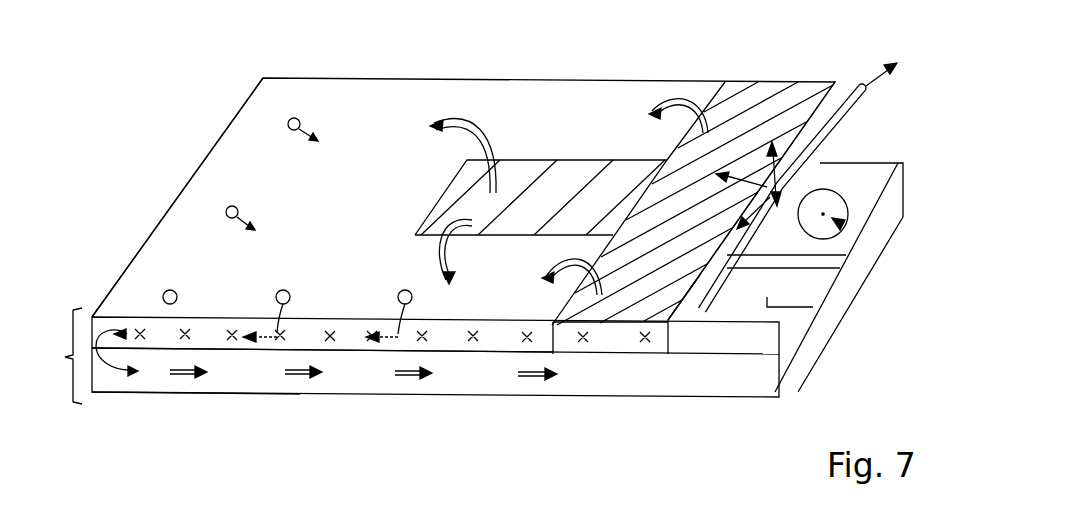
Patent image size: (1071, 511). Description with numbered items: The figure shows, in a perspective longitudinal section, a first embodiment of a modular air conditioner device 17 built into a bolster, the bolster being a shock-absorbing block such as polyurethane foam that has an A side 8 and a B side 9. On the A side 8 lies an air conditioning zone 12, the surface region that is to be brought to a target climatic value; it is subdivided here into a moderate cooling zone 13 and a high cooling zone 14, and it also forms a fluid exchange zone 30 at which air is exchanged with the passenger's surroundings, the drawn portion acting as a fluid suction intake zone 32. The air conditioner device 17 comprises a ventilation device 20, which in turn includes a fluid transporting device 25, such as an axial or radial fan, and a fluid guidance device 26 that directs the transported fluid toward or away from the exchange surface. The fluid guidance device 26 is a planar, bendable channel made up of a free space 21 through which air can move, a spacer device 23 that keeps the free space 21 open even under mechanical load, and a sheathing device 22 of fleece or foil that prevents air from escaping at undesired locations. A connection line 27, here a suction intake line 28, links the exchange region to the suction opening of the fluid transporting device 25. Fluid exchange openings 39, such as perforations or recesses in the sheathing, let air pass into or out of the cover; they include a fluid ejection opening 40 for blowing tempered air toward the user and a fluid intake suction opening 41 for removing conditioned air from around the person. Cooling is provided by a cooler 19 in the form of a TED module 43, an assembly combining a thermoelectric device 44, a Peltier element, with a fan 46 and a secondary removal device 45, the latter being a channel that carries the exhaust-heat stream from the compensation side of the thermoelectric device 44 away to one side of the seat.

The A side 8 is at (196, 204).
The B side 9 is at (138, 400).
The air conditioning zone 12 is at (744, 95).
The moderate cooling zone 13 is at (541, 151).
The high cooling zone 14 is at (446, 112).
The air conditioner device 17 is at (408, 356).
The cooler 19 is at (793, 320).
The ventilation device 20 is at (227, 114).
The free space 21 is at (229, 347).
The sheathing device 22 is at (202, 320).
The spacer device 23 is at (331, 342).
The fluid transporting device 25 is at (848, 232).
The fluid guidance device 26 is at (602, 347).
The connection line 27 is at (664, 377).
The suction intake line 28 is at (432, 393).
The fluid exchange zone 30 is at (625, 156).
The fluid suction intake zone 32 is at (576, 98).
The fluid exchange opening 39 is at (109, 237).
The fluid ejection opening 40 is at (662, 273).
The fluid intake suction opening 41 is at (165, 288).
The TED module 43 is at (793, 224).
The thermoelectric device 44 is at (779, 208).
The secondary removal device 45 is at (843, 128).
The fan 46 is at (832, 202).